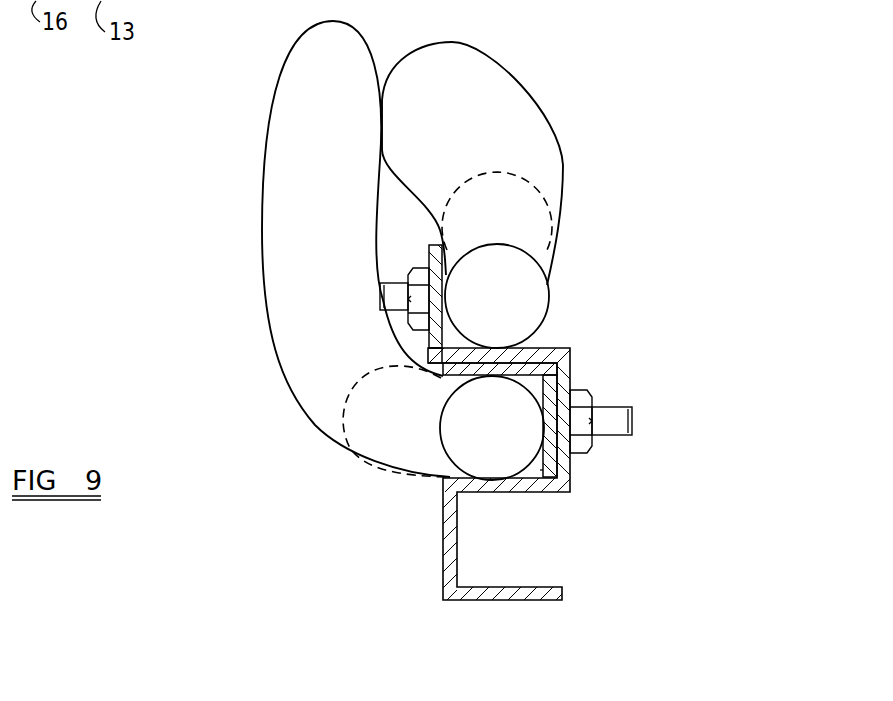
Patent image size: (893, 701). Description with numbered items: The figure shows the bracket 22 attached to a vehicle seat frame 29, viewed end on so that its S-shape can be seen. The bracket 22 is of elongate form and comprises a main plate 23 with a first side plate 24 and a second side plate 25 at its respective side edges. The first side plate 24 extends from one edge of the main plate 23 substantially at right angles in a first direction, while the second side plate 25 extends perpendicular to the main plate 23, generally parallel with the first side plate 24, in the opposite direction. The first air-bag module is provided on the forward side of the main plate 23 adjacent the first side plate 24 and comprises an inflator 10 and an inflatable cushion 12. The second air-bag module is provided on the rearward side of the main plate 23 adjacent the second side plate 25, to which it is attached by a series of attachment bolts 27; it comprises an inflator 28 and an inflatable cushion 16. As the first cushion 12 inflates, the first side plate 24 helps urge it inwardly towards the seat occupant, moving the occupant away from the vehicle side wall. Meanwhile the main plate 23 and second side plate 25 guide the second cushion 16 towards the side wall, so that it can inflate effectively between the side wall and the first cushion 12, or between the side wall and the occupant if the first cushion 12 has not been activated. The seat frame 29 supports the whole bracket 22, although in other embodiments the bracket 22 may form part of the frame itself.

The inflator 10 is at (525, 300).
The inflatable cushion 12 is at (523, 130).
The inflatable cushion 16 is at (287, 337).
The bracket 22 is at (432, 371).
The main plate 23 is at (548, 356).
The first side plate 24 is at (432, 262).
The second side plate 25 is at (557, 462).
The attachment bolts 27 is at (612, 437).
The inflator 28 is at (508, 462).
The seat frame 29 is at (596, 383).